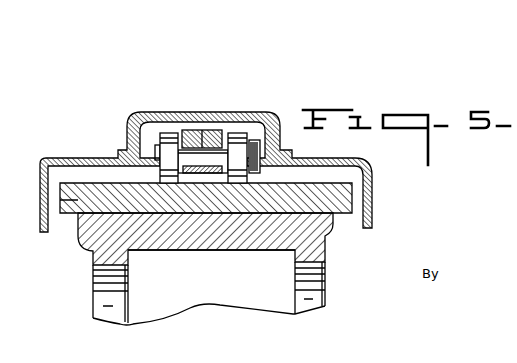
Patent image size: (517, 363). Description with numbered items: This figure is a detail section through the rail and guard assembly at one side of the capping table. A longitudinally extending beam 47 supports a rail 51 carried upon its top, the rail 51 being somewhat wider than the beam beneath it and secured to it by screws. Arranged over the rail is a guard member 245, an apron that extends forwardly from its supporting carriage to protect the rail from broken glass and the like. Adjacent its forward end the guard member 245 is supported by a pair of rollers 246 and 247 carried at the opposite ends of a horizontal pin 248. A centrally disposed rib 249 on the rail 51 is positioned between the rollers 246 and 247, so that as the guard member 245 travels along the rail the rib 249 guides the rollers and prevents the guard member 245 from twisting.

The guard member 245 is at (108, 158).
The roller 246 is at (170, 133).
The roller 247 is at (252, 140).
The horizontal pin 248 is at (204, 150).
The rail 51 is at (64, 203).
The rib 249 is at (167, 248).
The beam 47 is at (243, 228).